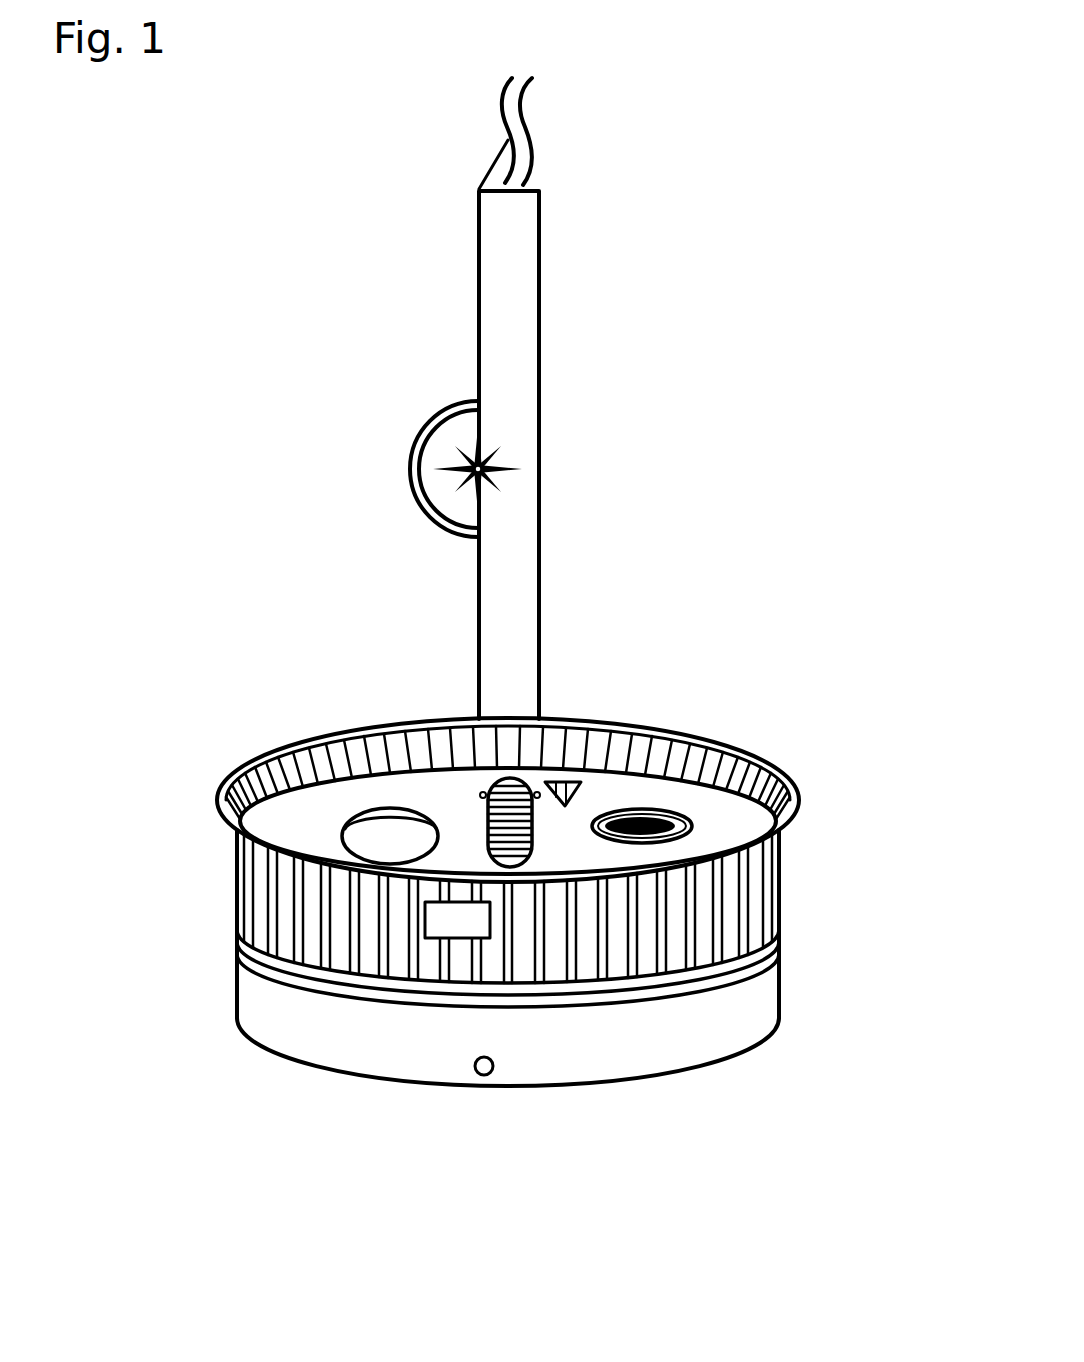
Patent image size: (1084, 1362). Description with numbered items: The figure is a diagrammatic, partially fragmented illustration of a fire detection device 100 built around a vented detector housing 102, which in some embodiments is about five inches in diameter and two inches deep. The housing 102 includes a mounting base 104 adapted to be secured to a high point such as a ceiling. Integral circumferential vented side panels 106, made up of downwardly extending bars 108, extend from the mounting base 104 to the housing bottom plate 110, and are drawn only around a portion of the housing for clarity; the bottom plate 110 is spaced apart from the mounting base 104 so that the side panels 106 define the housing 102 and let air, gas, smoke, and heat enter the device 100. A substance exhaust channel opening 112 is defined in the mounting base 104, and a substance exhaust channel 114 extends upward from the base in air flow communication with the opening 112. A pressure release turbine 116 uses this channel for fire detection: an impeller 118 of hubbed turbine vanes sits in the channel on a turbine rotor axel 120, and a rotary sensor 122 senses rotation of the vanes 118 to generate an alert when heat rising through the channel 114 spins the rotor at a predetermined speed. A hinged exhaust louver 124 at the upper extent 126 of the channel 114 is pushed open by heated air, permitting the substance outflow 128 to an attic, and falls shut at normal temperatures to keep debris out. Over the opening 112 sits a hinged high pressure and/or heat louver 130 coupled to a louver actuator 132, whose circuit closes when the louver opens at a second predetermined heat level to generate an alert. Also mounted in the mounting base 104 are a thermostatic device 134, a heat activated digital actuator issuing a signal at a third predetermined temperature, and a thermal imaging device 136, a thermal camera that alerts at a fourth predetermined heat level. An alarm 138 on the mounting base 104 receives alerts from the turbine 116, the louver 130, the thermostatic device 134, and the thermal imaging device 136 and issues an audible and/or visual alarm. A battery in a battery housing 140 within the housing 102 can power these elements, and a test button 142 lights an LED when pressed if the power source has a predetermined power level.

The fire detection device 100 is at (215, 350).
The vented detector housing 102 is at (188, 1066).
The mounting base 104 is at (425, 721).
The vented side panel 106 is at (211, 936).
The downwardly extending bars 108 is at (270, 897).
The housing bottom plate 110 is at (590, 1082).
The substance exhaust channel opening 112 is at (532, 842).
The substance exhaust channel 114 is at (543, 643).
The pressure release turbine 116 is at (365, 527).
The impeller 118 is at (483, 462).
The turbine rotor axel 120 is at (478, 469).
The rotary sensor 122 is at (412, 477).
The hinged exhaust louver 124 is at (493, 167).
The upper extent 126 is at (441, 215).
The substance outflow 128 is at (538, 121).
The high pressure and/or heat louver 130 is at (503, 831).
The high pressure and/or heat louver actuator 132 is at (484, 795).
The thermostatic device 134 is at (420, 851).
The thermal imaging device 136 is at (690, 831).
The alarm 138 is at (576, 781).
The battery housing 140 is at (440, 927).
The test button 142 is at (487, 1076).